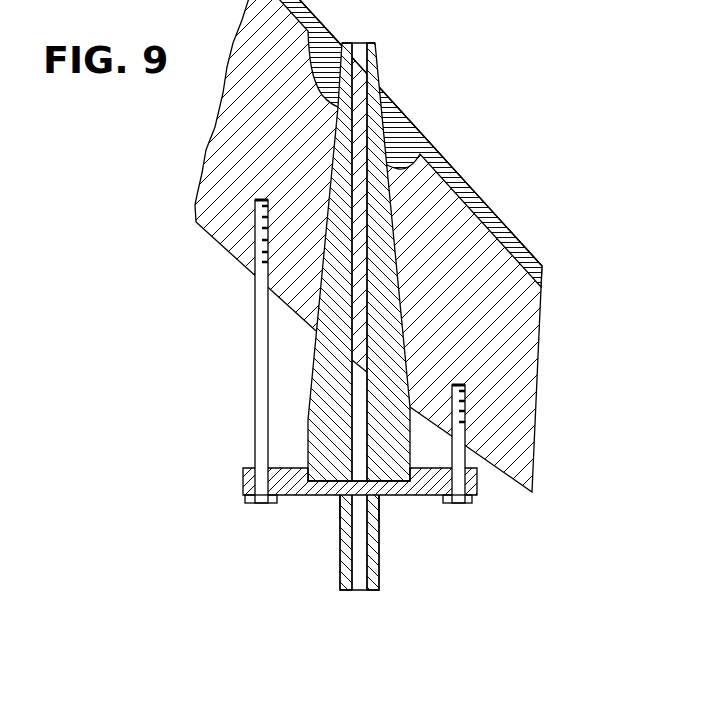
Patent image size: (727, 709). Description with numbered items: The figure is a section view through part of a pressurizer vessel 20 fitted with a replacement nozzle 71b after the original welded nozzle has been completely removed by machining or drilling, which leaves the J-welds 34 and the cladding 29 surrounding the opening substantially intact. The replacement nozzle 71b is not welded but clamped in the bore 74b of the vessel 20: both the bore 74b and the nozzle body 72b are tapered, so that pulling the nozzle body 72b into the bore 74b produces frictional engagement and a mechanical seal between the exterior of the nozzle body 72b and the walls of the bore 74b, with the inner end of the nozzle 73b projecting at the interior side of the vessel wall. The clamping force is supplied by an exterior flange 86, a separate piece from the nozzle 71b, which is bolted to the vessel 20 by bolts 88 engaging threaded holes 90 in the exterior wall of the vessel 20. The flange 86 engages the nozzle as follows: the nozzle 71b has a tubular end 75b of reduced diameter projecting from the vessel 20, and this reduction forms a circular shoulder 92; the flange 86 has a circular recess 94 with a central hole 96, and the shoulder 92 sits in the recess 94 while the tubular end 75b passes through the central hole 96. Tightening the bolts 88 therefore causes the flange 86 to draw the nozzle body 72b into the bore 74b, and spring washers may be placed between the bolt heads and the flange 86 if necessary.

The vessel 20 is at (505, 337).
The cladding 29 is at (473, 193).
The J-welds 34 is at (408, 137).
The replacement nozzle 71b is at (347, 331).
The nozzle body 72b is at (387, 327).
The upper tip of stud 73b is at (380, 63).
The bore 74b is at (397, 287).
The tubular end 75b is at (343, 568).
The exterior flange 86 is at (319, 455).
The bolts 88 is at (378, 373).
The threaded holes 90 is at (253, 222).
The circular shoulder 92 is at (406, 517).
The circular recess 94 is at (310, 467).
The central hole 96 is at (340, 497).